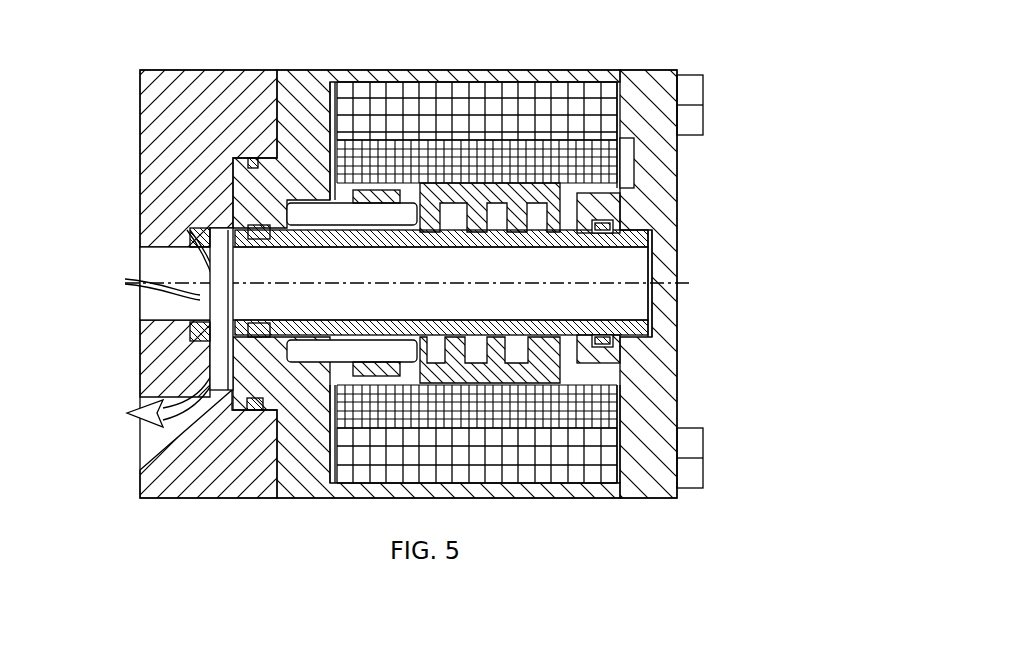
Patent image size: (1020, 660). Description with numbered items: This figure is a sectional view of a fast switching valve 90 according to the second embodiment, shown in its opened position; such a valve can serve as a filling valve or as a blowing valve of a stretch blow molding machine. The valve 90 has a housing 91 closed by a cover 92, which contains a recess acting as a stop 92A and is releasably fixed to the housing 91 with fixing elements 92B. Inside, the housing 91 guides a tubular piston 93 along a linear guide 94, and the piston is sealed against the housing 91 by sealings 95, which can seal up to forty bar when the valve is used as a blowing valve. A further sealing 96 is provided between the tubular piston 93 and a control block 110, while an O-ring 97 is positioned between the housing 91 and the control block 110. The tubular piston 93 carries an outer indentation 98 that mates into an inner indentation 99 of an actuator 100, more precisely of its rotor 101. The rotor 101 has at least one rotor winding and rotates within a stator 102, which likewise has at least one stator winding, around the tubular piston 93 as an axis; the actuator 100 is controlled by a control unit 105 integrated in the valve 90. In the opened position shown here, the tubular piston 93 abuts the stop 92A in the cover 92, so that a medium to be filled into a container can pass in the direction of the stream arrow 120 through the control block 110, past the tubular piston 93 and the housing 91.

The valve 90 is at (591, 43).
The housing 91 is at (315, 78).
The cover 92 is at (660, 72).
The stop 92A is at (655, 262).
The fixing elements 92B is at (703, 86).
The tubular piston 93 is at (618, 300).
The linear guide 94 is at (236, 377).
The sealings 95 is at (237, 223).
The sealing 96 is at (193, 233).
The O-ring 97 is at (255, 158).
The outer indentation 98 is at (600, 343).
The inner indentation 99 is at (540, 380).
The actuator 100 is at (538, 476).
The rotor 101 is at (590, 419).
The stator 102 is at (618, 483).
The control unit 105 is at (633, 165).
The control block 110 is at (187, 488).
The stream arrow 120 is at (197, 293).